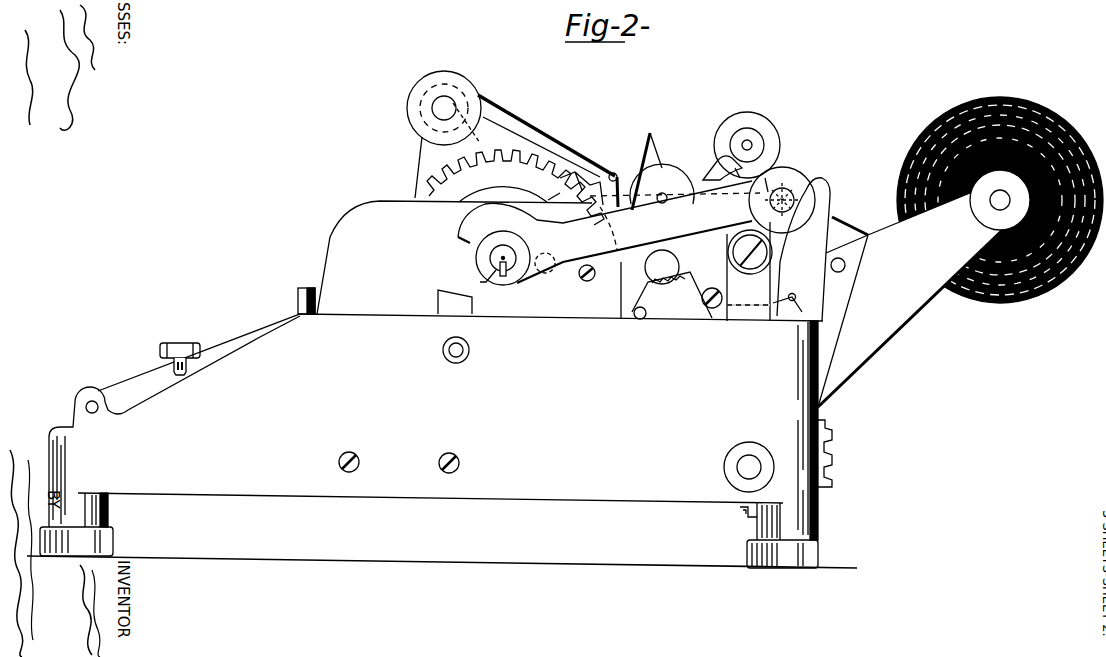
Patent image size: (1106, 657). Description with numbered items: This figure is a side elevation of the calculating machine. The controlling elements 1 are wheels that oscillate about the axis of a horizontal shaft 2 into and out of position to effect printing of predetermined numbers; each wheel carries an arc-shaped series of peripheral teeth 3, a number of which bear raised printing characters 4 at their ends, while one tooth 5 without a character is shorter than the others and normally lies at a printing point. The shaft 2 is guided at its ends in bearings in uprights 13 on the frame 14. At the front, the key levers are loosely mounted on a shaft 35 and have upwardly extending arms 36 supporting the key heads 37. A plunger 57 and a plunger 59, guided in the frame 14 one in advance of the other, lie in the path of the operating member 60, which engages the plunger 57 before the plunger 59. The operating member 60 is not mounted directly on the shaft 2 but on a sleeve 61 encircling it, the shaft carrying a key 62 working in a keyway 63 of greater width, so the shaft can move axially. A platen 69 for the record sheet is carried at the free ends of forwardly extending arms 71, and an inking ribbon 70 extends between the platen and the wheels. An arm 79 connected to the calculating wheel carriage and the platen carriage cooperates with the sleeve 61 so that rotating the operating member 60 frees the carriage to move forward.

The controlling element 1 is at (527, 163).
The horizontal shaft 2 is at (500, 258).
The peripheral teeth 3 is at (563, 160).
The printing characters 4 is at (583, 173).
The short tooth 5 is at (554, 189).
The uprights 13 is at (350, 223).
The frame 14 is at (530, 490).
The shaft 35 is at (94, 412).
The upwardly extending arms 36 is at (150, 378).
The key heads 37 is at (182, 344).
The plunger 57 is at (452, 296).
The plunger 59 is at (322, 298).
The operating member 60 is at (478, 219).
The sleeve 61 is at (508, 240).
The key 62 is at (508, 282).
The keyway 63 is at (492, 287).
The platen 69 is at (662, 166).
The inking ribbon 70 is at (492, 103).
The arms 71 is at (704, 172).
The arm 79 is at (618, 272).